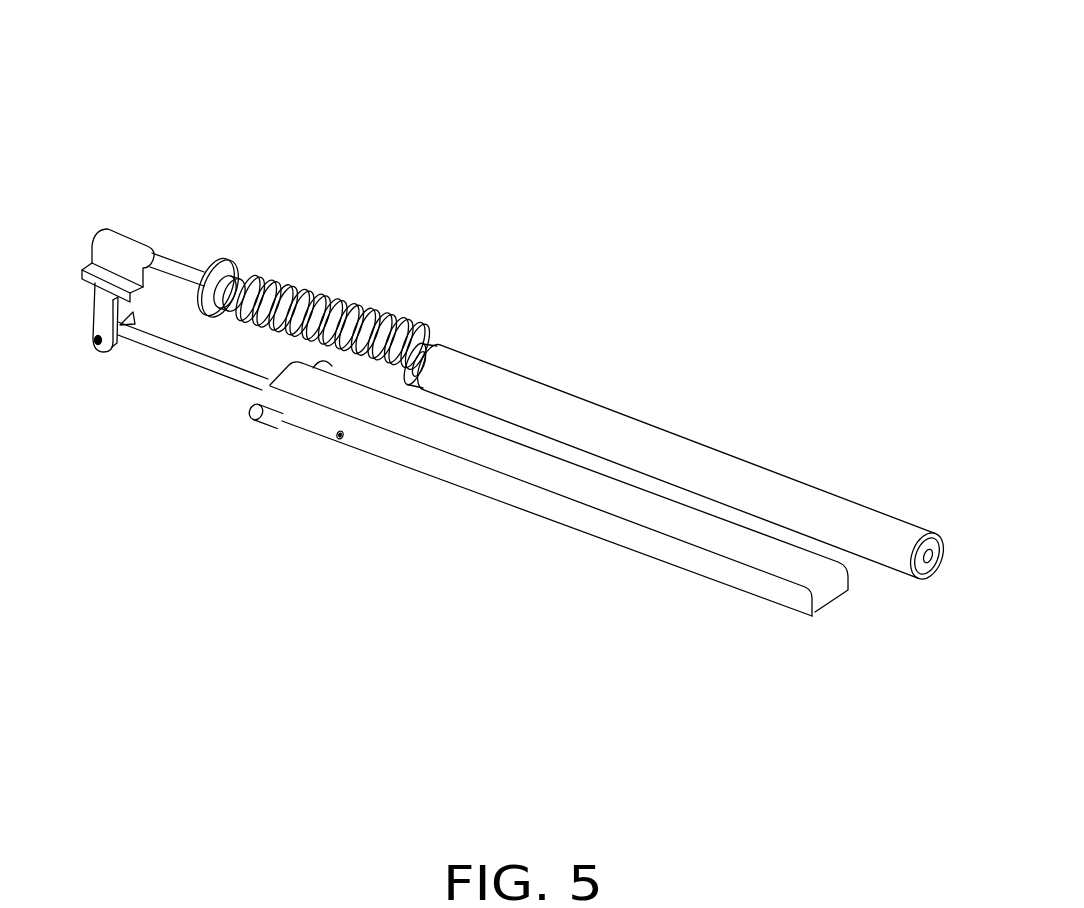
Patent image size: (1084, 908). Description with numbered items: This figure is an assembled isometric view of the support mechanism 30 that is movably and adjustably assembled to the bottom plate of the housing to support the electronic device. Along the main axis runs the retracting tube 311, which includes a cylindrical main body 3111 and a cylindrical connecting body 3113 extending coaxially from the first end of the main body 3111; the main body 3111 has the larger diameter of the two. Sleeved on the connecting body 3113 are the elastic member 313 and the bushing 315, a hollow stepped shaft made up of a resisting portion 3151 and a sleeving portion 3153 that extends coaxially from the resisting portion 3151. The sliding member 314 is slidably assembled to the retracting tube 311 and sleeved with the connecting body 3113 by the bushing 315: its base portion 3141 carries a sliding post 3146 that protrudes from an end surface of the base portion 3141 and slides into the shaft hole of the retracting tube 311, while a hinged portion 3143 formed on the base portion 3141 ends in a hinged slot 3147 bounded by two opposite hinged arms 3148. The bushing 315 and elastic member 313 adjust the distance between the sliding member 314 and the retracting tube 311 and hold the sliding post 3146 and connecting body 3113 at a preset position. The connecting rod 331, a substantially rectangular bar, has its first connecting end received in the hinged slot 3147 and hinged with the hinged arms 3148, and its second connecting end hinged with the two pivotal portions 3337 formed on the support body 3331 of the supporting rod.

The support mechanism 30 is at (517, 61).
The retracting tube 311 is at (558, 256).
The main body 3111 is at (500, 387).
The connecting body 3113 is at (417, 333).
The elastic member 313 is at (350, 313).
The sliding member 314 is at (165, 74).
The base portion 3141 is at (118, 253).
The hinged portion 3143 is at (90, 262).
The sliding post 3146 is at (178, 268).
The hinged slot 3147 is at (128, 314).
The hinged arms 3148 is at (96, 347).
The bushing 315 is at (331, 151).
The resisting portion 3151 is at (222, 262).
The sleeving portion 3153 is at (238, 275).
The connecting rod 331 is at (225, 382).
The support body 3331 is at (674, 550).
The pivotal portions 3337 is at (343, 440).